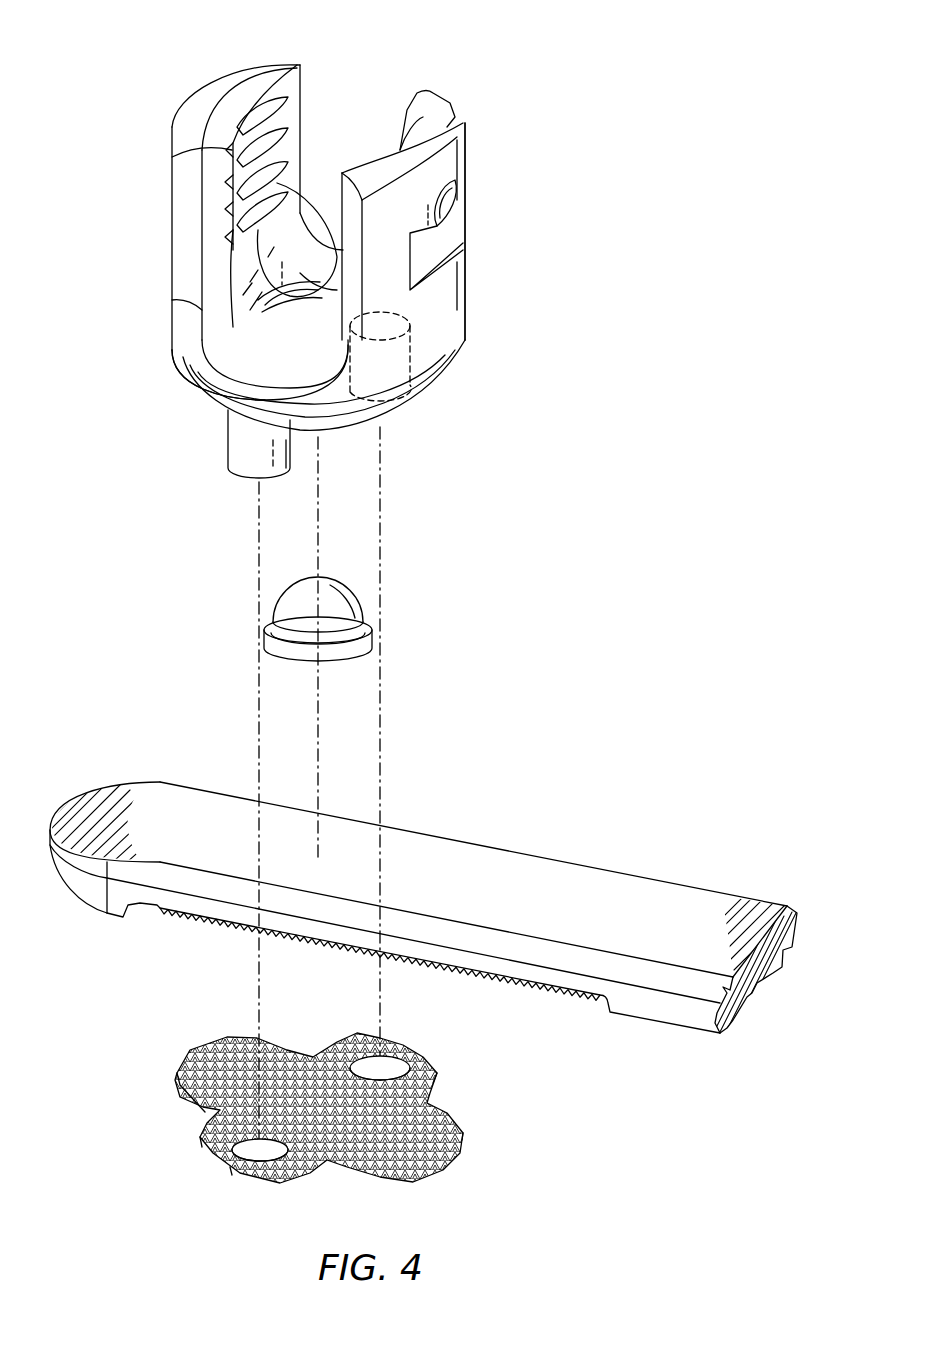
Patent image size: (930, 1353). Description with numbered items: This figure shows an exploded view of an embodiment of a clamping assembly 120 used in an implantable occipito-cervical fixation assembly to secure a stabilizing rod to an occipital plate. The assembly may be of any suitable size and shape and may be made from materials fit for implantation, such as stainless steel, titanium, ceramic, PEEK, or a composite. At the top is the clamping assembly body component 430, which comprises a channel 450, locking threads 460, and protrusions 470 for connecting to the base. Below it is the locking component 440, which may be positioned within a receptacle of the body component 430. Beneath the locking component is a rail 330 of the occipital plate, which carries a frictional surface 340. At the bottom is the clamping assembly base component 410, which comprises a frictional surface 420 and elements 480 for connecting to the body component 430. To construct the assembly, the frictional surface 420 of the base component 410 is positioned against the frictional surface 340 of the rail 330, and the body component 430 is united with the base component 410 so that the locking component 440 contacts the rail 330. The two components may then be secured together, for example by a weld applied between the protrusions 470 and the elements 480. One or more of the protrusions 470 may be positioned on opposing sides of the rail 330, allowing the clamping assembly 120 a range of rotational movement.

The clamping assembly 120 is at (171, 67).
The locking threads 460 is at (290, 115).
The clamping assembly body component 430 is at (467, 175).
The protrusions 470 is at (468, 308).
The channel 450 is at (205, 342).
The locking component 440 is at (297, 597).
The rail 330 is at (128, 797).
The frictional surface of rail 340 is at (324, 944).
The clamping assembly base component 410 is at (168, 1107).
The frictional surface 420 is at (223, 1057).
The elements 480 is at (393, 1063).